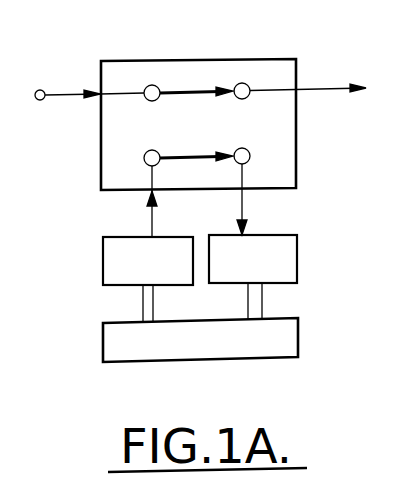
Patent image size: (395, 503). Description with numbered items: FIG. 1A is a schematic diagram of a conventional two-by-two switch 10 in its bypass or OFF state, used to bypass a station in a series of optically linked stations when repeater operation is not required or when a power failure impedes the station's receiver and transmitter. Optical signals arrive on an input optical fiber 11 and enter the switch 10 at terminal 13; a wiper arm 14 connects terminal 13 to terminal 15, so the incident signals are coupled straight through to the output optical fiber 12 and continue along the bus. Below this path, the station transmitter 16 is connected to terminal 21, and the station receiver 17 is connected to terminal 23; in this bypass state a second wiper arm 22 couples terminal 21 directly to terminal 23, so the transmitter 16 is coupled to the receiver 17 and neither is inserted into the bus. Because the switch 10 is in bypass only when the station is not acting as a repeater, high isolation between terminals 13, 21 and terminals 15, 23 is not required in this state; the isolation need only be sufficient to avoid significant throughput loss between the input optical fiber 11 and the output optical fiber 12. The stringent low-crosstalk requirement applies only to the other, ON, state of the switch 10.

The switch 10 is at (148, 60).
The input optical fiber 11 is at (62, 92).
The output optical fiber 12 is at (330, 88).
The terminal 13 is at (154, 86).
The wiper arm 14 is at (190, 90).
The terminal 15 is at (246, 83).
The station transmitter 16 is at (102, 258).
The station receiver 17 is at (299, 257).
The terminal 21 is at (143, 157).
The wiper arm 22 is at (185, 155).
The terminal 23 is at (249, 151).